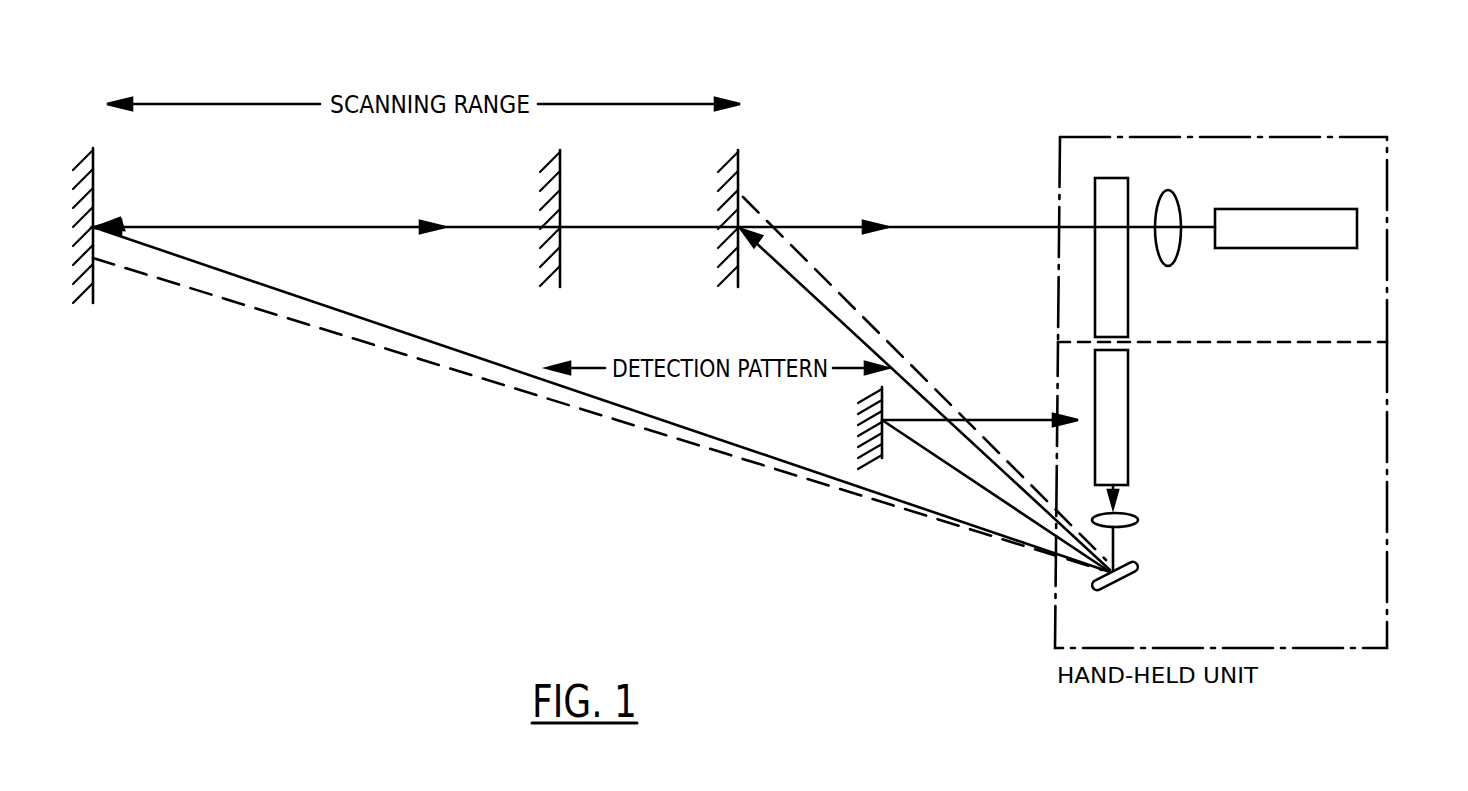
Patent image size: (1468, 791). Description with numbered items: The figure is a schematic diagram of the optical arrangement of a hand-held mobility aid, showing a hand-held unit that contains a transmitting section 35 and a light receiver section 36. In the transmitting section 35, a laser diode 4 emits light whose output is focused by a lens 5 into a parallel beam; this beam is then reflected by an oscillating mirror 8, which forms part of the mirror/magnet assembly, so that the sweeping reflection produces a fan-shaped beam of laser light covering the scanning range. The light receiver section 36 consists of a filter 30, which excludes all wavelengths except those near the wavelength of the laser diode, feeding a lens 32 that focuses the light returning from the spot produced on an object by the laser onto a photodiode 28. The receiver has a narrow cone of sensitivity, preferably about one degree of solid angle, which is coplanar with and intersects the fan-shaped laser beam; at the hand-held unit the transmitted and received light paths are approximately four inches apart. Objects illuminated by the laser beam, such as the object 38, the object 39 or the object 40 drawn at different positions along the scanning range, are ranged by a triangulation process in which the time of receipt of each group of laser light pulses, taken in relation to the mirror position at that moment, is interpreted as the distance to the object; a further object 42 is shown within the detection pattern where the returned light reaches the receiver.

The laser diode 4 is at (1128, 398).
The lens 5 is at (1130, 514).
The oscillating mirror 8 is at (1127, 583).
The photodiode 28 is at (1308, 209).
The filter 30 is at (1118, 178).
The lens 32 is at (1172, 190).
The transmitting section 35 is at (1386, 503).
The light receiver section 36 is at (1388, 182).
The object 38 is at (97, 224).
The object 39 is at (562, 197).
The object 40 is at (741, 224).
The object in detection pattern 42 is at (883, 435).